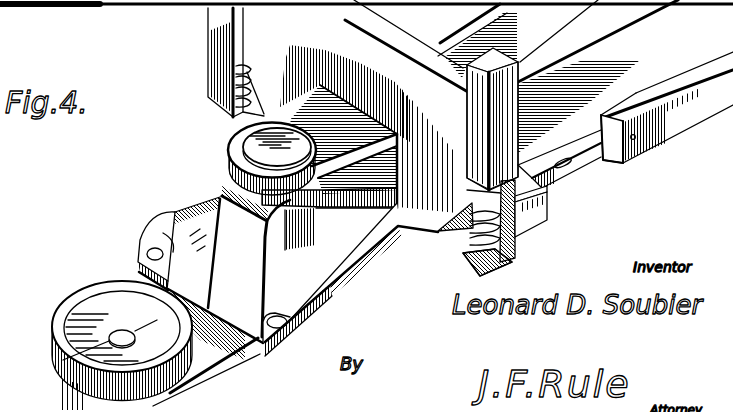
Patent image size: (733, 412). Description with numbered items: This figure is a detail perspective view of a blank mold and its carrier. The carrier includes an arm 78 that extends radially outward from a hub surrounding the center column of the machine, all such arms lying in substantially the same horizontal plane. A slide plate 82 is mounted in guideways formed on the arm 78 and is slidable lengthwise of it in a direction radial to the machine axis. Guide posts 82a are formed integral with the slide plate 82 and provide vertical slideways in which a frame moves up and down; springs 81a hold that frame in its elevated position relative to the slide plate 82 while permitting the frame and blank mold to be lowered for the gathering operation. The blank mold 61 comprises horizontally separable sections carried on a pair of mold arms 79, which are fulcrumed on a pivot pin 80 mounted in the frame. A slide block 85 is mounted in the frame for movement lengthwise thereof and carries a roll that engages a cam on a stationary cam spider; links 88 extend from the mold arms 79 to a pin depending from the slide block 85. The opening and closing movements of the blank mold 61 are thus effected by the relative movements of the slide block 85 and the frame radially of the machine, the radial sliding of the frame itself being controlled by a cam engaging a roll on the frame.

The blank mold 61 is at (92, 318).
The arm 78 is at (700, 105).
The mold arms 79 is at (228, 356).
The pivot pin 80 is at (262, 145).
The springs 81a is at (248, 88).
The slide plate 82 is at (553, 136).
The guide posts 82a is at (481, 108).
The slide block 85 is at (532, 33).
The links 88 is at (347, 290).